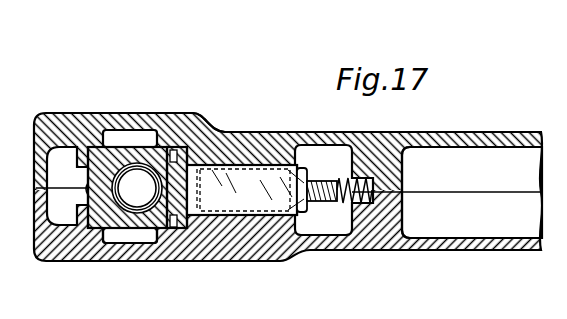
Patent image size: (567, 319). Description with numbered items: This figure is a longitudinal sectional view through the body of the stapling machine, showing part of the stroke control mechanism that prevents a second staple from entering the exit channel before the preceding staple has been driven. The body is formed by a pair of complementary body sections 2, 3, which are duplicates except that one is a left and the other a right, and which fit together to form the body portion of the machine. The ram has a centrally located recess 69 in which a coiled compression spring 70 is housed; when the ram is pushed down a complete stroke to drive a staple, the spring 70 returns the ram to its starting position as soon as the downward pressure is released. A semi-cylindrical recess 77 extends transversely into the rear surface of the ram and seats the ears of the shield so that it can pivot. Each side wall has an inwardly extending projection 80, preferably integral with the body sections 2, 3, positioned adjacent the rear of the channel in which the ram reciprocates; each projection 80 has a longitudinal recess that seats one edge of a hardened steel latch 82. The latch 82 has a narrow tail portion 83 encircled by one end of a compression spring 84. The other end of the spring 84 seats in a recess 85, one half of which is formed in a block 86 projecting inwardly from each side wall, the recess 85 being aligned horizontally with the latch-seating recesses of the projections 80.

The body section 2 is at (264, 133).
The body section 3 is at (248, 250).
The recess 69 is at (136, 177).
The coiled compression spring 70 is at (128, 228).
The semi-cylindrical recess 77 is at (177, 228).
The projection 80 is at (220, 132).
The latch 82 is at (218, 203).
The tail portion 83 is at (318, 203).
The compression spring 84 is at (345, 205).
The recess 85 is at (402, 203).
The block 86 is at (388, 168).